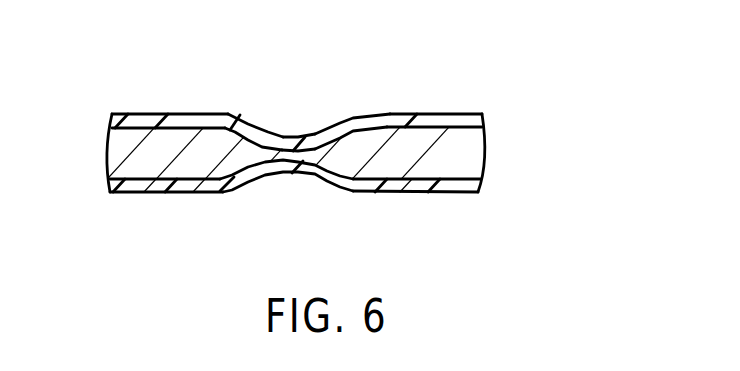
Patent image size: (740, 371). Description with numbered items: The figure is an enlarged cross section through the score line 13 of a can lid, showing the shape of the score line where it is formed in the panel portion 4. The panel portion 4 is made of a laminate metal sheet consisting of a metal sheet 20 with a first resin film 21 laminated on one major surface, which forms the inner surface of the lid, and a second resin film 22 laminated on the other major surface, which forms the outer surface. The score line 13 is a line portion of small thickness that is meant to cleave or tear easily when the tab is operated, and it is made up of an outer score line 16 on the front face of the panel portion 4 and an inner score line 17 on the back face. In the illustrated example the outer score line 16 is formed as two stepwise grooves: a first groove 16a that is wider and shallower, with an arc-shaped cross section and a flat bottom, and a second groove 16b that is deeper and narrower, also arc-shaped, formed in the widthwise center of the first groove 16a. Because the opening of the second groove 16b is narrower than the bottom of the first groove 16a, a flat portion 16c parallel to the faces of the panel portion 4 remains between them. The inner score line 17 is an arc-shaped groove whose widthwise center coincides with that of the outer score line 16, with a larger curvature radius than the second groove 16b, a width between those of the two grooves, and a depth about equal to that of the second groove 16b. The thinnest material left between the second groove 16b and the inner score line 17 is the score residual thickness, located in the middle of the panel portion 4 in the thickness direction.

The panel portion 4 is at (490, 68).
The score line 13 is at (417, 77).
The outer score line 16 is at (333, 105).
The first groove 16a is at (190, 121).
The second groove 16b is at (285, 136).
The flat portion 16c is at (222, 130).
The inner score line 17 is at (311, 175).
The metal sheet 20 is at (466, 146).
The first resin film 21 is at (481, 190).
The second resin film 22 is at (469, 116).